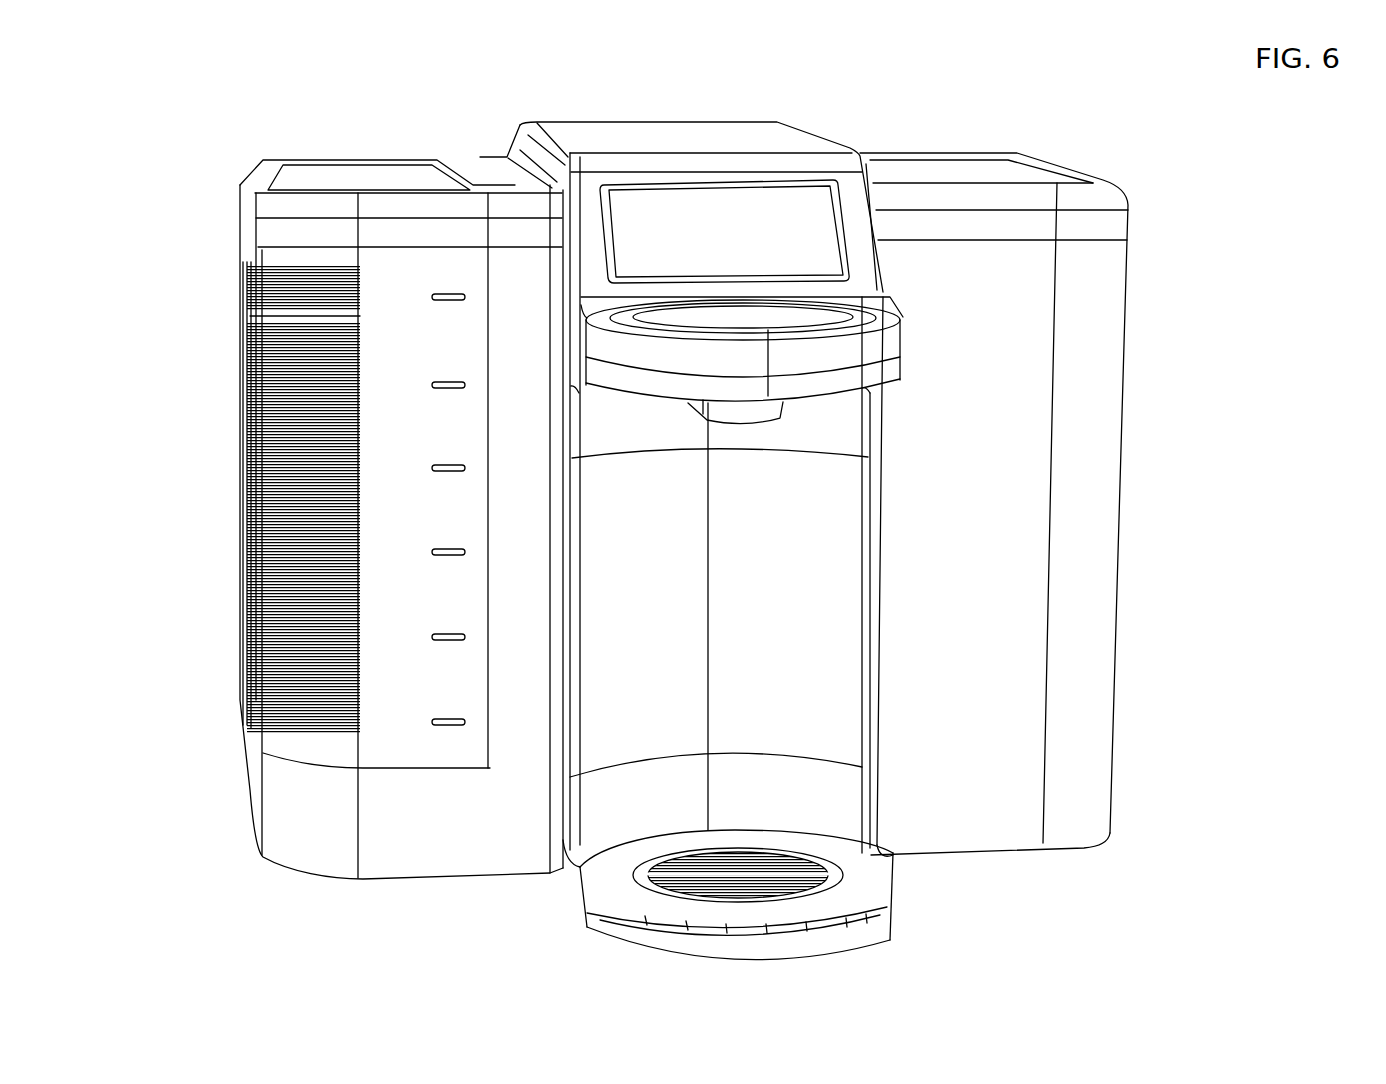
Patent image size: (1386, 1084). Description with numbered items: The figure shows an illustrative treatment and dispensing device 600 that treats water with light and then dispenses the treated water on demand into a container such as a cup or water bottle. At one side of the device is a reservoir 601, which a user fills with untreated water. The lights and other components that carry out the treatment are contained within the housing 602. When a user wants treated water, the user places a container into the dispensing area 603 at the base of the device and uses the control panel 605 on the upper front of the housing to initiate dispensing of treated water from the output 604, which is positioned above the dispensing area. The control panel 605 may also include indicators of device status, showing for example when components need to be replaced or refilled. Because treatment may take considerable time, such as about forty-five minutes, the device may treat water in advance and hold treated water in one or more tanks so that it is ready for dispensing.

The treatment and dispensing device 600 is at (677, 100).
The reservoir 601 is at (430, 447).
The housing 602 is at (983, 420).
The dispensing area 603 is at (747, 867).
The output 604 is at (760, 413).
The control panel 605 is at (780, 217).